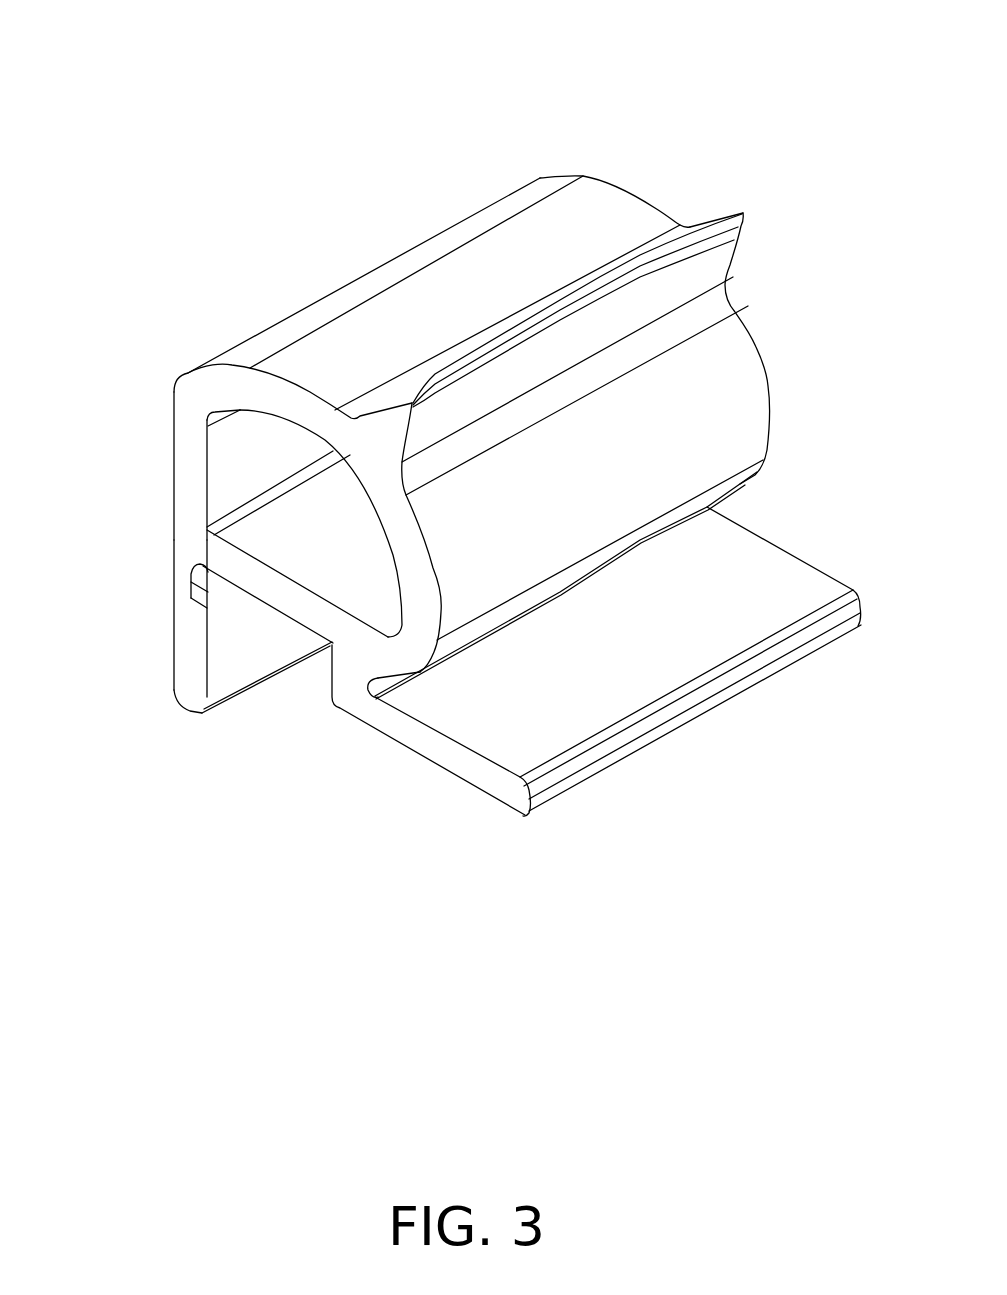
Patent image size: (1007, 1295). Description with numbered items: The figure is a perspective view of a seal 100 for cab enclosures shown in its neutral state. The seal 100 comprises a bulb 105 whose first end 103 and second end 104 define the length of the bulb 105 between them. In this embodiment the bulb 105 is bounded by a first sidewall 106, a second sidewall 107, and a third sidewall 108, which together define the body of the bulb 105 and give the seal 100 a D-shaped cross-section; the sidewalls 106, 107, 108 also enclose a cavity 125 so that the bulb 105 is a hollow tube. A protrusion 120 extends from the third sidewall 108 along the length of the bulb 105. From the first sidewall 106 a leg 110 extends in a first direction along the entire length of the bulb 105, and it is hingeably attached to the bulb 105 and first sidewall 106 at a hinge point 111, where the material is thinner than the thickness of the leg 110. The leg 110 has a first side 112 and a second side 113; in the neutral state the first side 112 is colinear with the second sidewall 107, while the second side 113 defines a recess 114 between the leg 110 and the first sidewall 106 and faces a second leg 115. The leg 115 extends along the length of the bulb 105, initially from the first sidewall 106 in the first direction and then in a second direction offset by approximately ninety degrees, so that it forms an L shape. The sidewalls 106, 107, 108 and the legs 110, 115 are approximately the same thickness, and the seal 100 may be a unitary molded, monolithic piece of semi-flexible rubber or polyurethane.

The seal 100 is at (243, 65).
The first end 103 is at (88, 707).
The second end 104 is at (716, 169).
The bulb 105 is at (383, 245).
The first sidewall 106 is at (293, 612).
The second sidewall 107 is at (183, 455).
The third sidewall 108 is at (288, 395).
The leg 110 is at (192, 690).
The hinge point 111 is at (193, 567).
The first side 112 is at (173, 628).
The second side 113 is at (237, 668).
The recess 114 is at (308, 700).
The leg 115 is at (467, 770).
The protrusion 120 is at (724, 256).
The cavity 125 is at (288, 540).